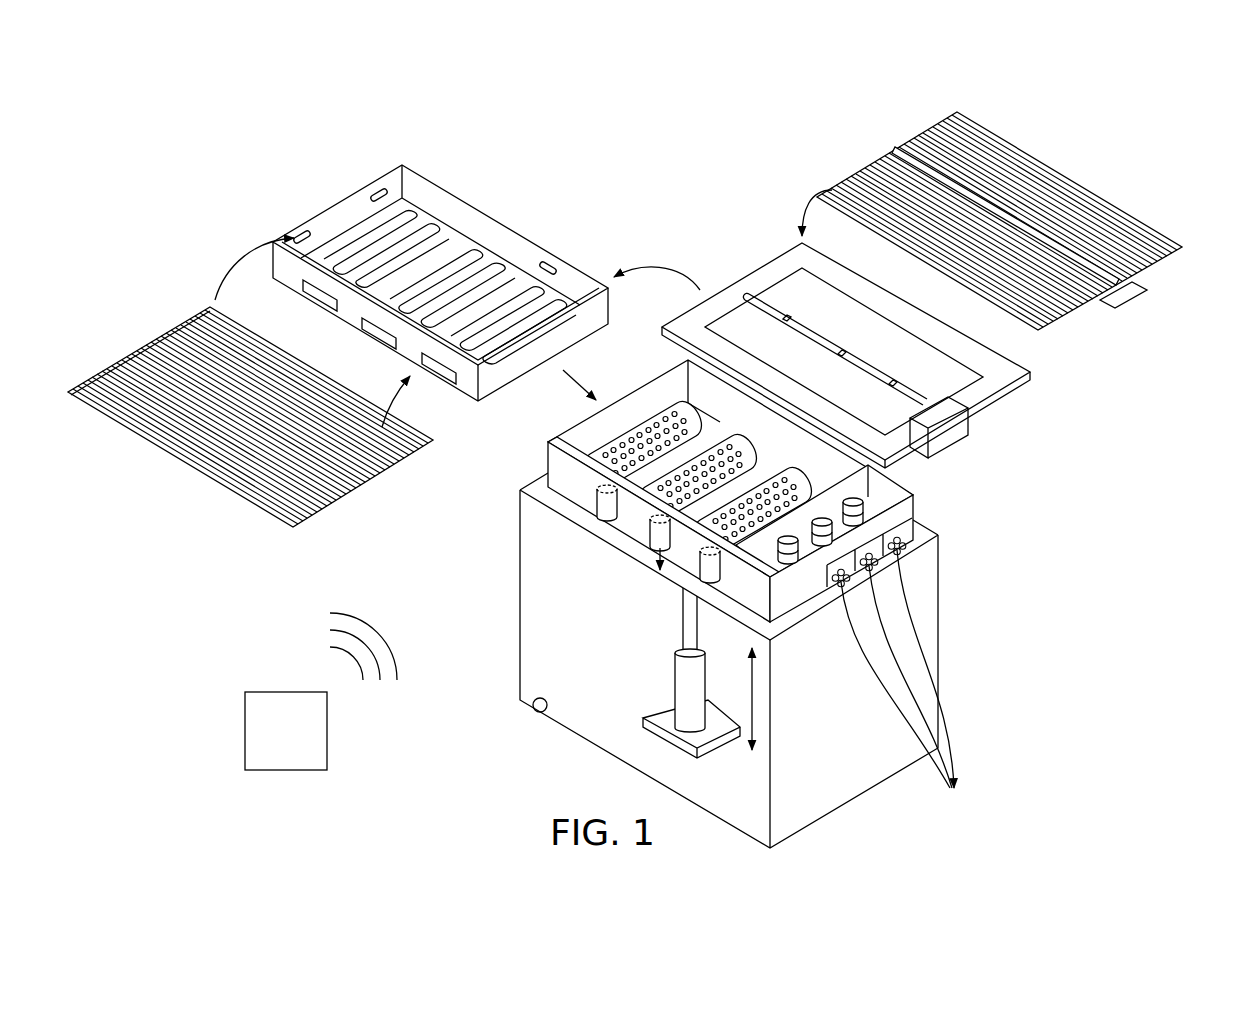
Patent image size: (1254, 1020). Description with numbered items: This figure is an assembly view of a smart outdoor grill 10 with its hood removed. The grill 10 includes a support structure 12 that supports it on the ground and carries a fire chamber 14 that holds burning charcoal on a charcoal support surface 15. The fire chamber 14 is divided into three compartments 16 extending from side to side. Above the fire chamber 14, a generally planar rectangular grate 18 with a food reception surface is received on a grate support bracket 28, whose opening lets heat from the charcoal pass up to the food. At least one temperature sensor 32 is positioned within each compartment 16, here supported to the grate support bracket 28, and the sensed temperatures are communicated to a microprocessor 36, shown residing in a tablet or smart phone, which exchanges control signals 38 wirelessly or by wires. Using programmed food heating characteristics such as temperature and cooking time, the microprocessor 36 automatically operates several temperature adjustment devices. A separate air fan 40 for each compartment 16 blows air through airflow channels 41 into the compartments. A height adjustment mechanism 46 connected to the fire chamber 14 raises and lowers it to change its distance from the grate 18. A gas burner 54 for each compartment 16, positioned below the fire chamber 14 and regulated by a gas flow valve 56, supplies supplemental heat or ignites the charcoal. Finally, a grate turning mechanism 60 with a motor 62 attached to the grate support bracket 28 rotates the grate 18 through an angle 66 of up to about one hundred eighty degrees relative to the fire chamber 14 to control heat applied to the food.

The outdoor grill 10 is at (640, 190).
The support structure 12 is at (755, 604).
The fire chamber 14 is at (418, 244).
The charcoal support surface 15 is at (223, 478).
The compartments 16 is at (480, 315).
The grate 18 is at (1157, 230).
The grate support bracket 28 is at (884, 333).
The temperature sensor 32 is at (791, 317).
The microprocessor 36 is at (268, 752).
The control signals 38 is at (382, 681).
The air fan 40 is at (895, 669).
The airflow channels 41 is at (597, 505).
The height adjustment mechanism 46 is at (533, 707).
The gas burner 54 is at (597, 465).
The gas flow valve 56 is at (866, 500).
The grate turning mechanism 60 is at (1110, 432).
The motor 62 is at (948, 450).
The angle 66 is at (873, 411).